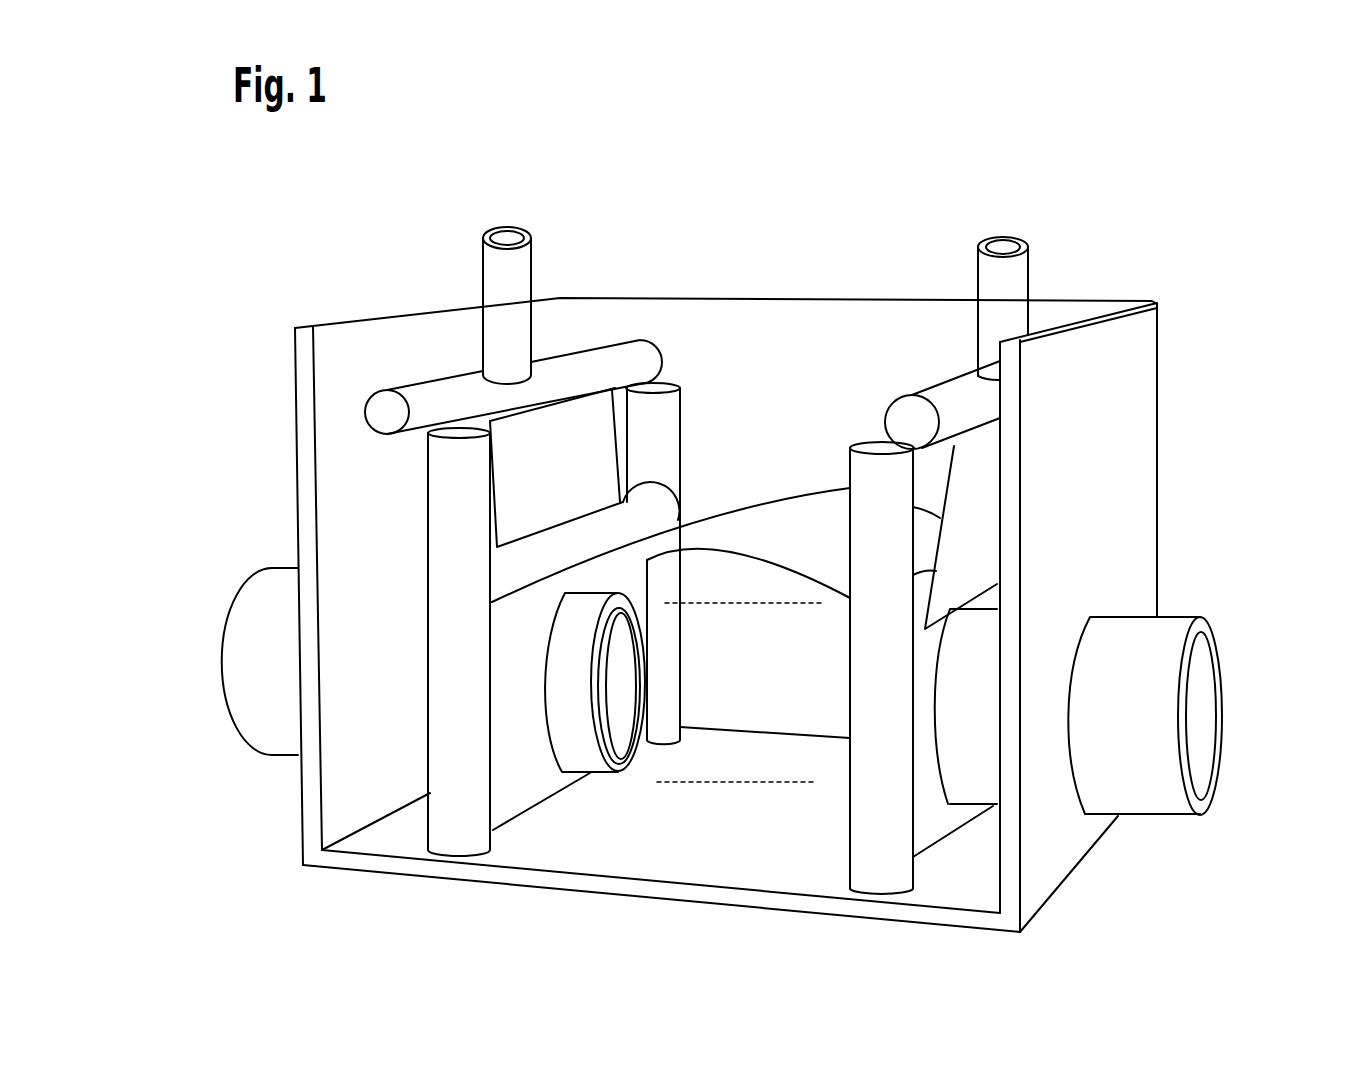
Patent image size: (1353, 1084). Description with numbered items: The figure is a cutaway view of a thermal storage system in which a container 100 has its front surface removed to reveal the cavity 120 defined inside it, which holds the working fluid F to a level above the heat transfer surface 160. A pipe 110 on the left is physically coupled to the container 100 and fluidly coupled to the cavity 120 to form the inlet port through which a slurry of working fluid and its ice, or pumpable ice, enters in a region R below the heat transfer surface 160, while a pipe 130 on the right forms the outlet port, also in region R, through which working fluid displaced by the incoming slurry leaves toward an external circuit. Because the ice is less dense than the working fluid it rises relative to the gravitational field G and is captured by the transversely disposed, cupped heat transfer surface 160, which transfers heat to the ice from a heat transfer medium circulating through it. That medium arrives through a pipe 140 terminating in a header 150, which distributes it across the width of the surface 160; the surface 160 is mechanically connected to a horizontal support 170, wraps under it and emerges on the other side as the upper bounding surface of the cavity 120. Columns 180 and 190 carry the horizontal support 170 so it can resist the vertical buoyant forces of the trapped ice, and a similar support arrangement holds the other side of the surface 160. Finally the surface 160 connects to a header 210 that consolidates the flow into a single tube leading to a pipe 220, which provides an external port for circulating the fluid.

The container 100 is at (308, 313).
The pipe 110 is at (223, 577).
The cavity 120 is at (739, 450).
The pipe 130 is at (1230, 638).
The pipe 140 is at (501, 195).
The header 150 is at (626, 320).
The heat transfer surface 160 is at (743, 508).
The horizontal support 170 is at (621, 520).
The column 180 is at (459, 642).
The column 190 is at (770, 638).
The header 210 is at (930, 371).
The pipe 220 is at (961, 238).
The working fluid F is at (378, 773).
The gravitational field G is at (1132, 172).
The region R is at (738, 712).